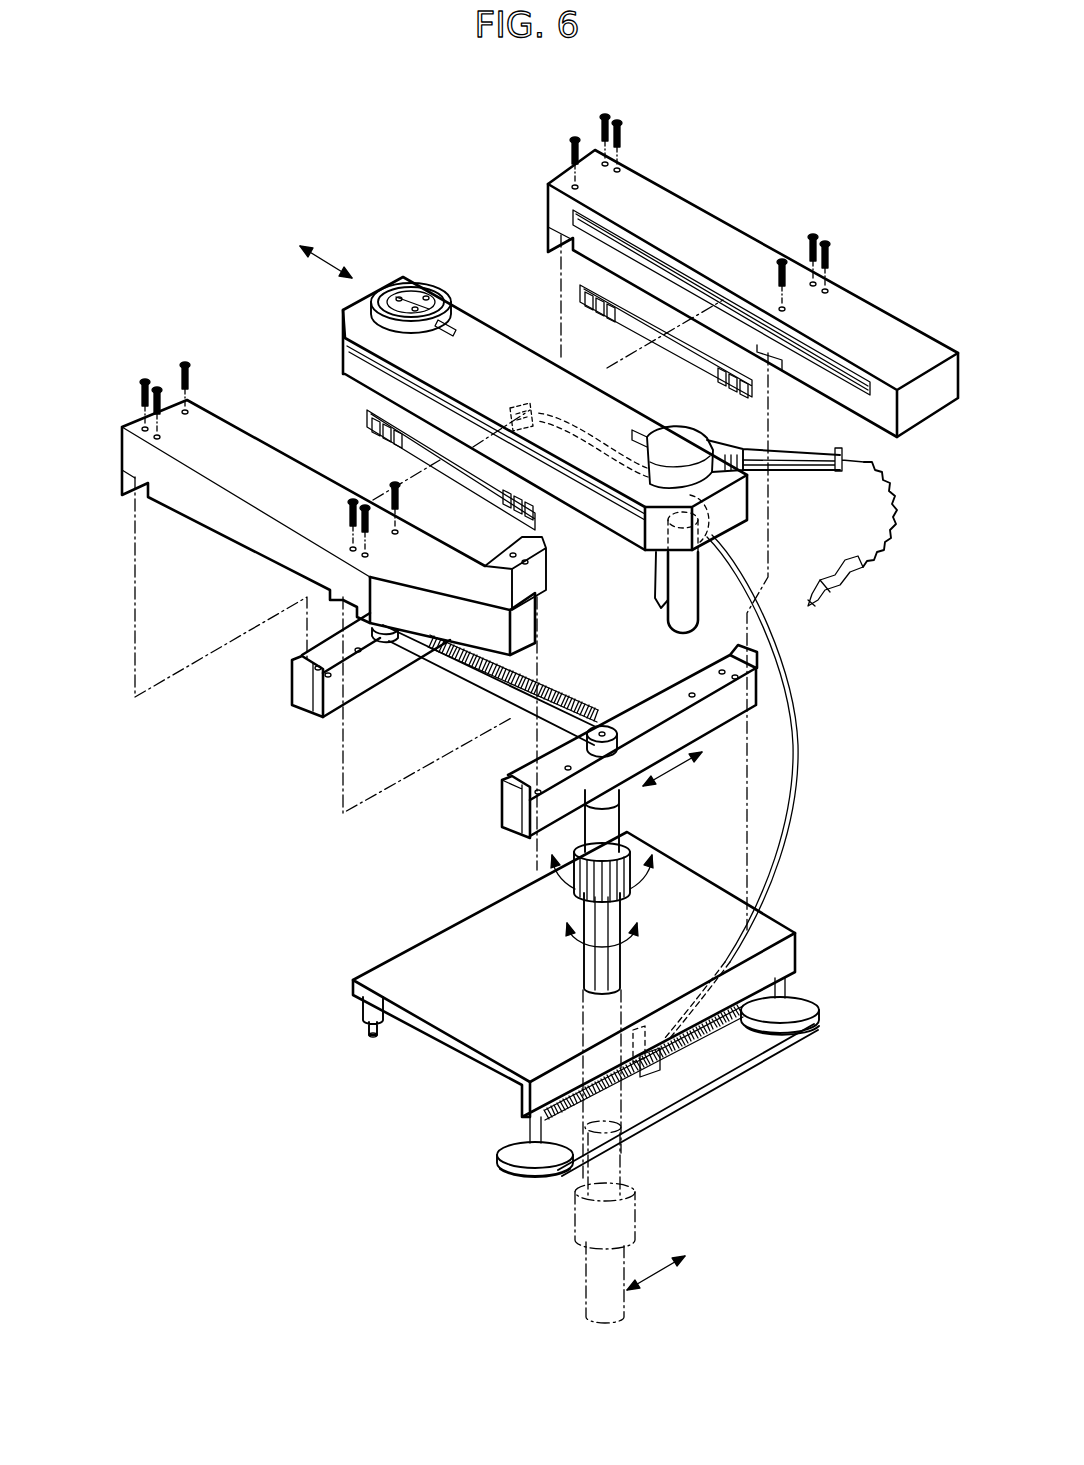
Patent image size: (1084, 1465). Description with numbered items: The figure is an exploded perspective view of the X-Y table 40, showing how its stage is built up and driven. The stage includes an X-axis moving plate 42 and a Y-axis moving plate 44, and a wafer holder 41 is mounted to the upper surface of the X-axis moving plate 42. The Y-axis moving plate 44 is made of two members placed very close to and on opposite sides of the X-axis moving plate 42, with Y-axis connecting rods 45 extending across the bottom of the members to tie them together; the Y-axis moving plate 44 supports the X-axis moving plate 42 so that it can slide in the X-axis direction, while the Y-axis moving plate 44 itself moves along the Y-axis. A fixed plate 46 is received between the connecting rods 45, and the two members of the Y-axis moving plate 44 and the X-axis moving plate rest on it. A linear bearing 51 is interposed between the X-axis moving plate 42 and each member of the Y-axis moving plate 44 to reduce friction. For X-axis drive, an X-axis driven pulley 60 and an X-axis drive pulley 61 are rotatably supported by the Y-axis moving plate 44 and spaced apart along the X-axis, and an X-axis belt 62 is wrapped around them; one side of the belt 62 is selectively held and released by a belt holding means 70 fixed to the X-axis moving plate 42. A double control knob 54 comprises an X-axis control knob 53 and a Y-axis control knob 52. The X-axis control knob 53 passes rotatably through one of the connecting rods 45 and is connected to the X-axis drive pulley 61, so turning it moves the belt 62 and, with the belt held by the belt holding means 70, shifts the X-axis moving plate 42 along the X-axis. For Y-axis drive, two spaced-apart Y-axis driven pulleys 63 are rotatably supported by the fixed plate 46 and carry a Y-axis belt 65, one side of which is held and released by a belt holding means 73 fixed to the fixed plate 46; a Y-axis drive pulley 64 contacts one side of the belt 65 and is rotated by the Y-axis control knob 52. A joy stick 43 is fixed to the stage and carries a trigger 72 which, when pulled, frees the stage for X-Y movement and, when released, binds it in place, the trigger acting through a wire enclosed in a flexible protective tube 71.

The X-Y table 40 is at (872, 212).
The wafer holder 41 is at (408, 281).
The X-axis moving plate 42 is at (476, 297).
The joy stick 43 is at (696, 595).
The Y-axis moving plate 44 is at (888, 318).
The Y-axis connecting rods 45 is at (660, 700).
The fixed plate 46 is at (402, 952).
The linear bearing 51 is at (627, 323).
The Y-axis control knob 52 is at (584, 865).
The X-axis control knob 53 is at (578, 905).
The double control knob 54 is at (372, 868).
The X-axis driven pulley 60 is at (378, 634).
The X-axis drive pulley 61 is at (603, 725).
The X-axis belt 62 is at (468, 681).
The Y-axis driven pulleys 63 is at (812, 998).
The Y-axis drive pulley 64 is at (504, 892).
The Y-axis belt 65 is at (744, 1068).
The belt holding means 70 is at (516, 400).
The tube 71 is at (598, 433).
The trigger 72 is at (655, 590).
The belt holding means 73 is at (662, 1079).